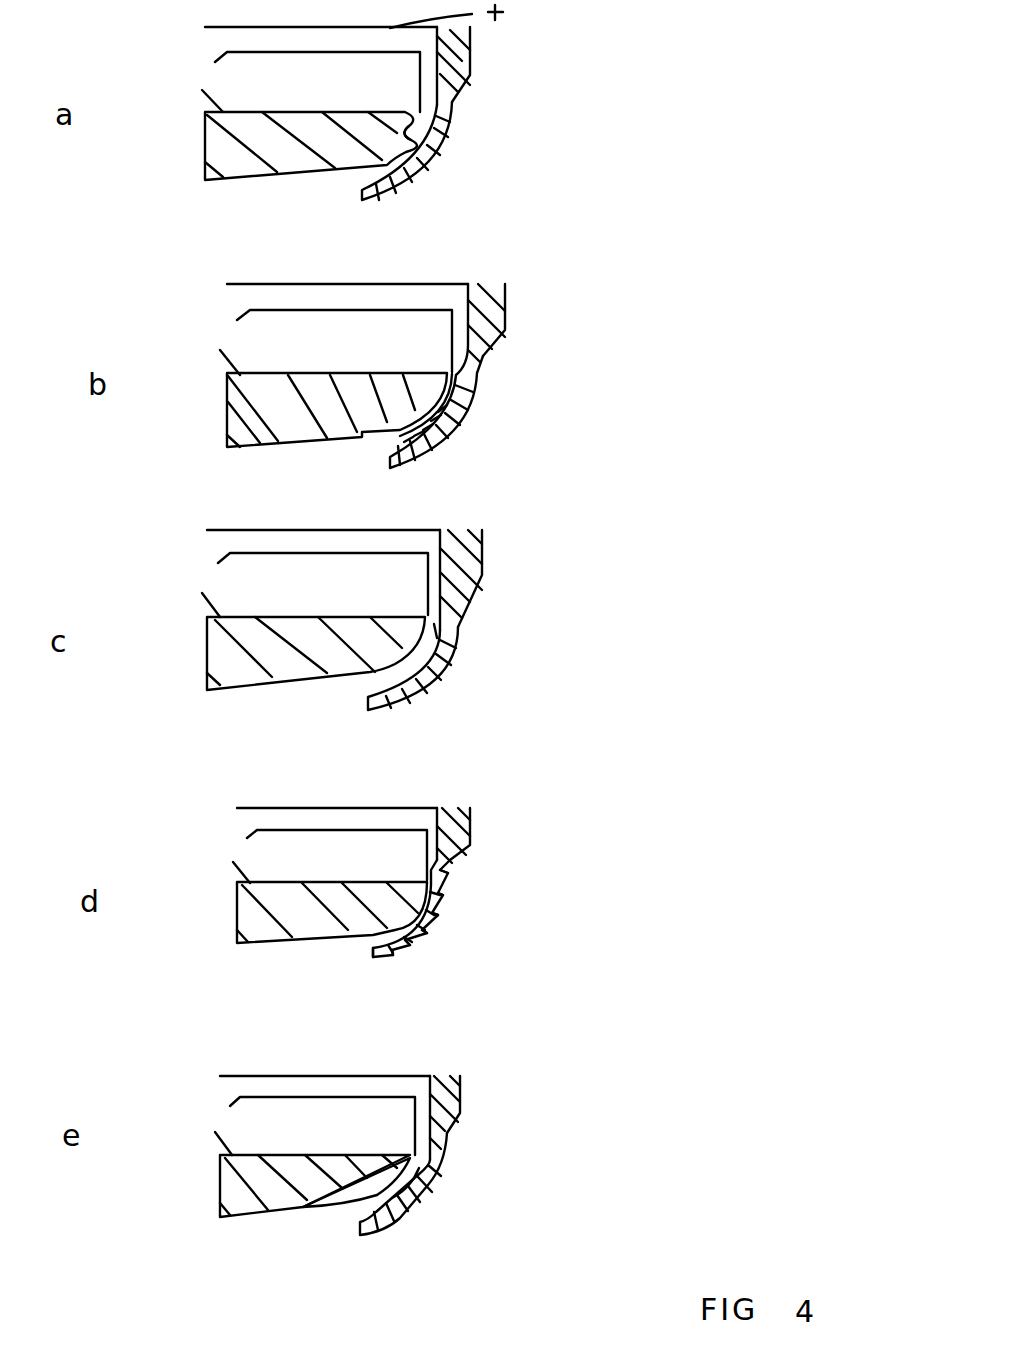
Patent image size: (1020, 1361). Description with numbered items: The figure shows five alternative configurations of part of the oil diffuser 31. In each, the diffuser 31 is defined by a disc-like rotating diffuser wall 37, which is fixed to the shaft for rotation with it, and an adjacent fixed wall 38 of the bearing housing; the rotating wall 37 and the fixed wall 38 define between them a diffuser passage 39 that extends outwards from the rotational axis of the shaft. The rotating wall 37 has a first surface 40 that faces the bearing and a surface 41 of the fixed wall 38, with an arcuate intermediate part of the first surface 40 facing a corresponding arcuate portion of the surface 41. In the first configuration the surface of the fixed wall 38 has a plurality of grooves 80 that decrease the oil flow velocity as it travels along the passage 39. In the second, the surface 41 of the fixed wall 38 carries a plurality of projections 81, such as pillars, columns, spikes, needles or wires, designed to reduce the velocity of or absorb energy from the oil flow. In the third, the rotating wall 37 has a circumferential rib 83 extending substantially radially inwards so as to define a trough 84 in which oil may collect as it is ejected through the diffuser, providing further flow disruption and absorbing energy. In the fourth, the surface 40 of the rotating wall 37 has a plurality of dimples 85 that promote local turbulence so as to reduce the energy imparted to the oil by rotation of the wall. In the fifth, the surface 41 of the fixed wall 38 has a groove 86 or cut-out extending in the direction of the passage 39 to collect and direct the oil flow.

In FIG. 4a, the oil diffuser 31 is at (545, 45).
In FIG. 4b, the oil diffuser 31 is at (565, 333).
In FIG. 4a, the diffuser wall 37 is at (458, 78).
In FIG. 4c, the diffuser wall 37 is at (453, 590).
In FIG. 4d, the diffuser wall 37 is at (455, 843).
In FIG. 4e, the diffuser wall 37 is at (450, 1110).
In FIG. 4a, the fixed wall 38 is at (216, 152).
In FIG. 4b, the fixed wall 38 is at (244, 428).
In FIG. 4d, the fixed wall 38 is at (250, 918).
In FIG. 4e, the fixed wall 38 is at (236, 1190).
In FIG. 4a, the diffuser passage 39 is at (423, 173).
In FIG. 4d, the diffuser passage 39 is at (378, 942).
In FIG. 4e, the diffuser passage 39 is at (380, 1212).
In FIG. 4d, the first surface 40 is at (455, 885).
In FIG. 4b, the surface 41 is at (445, 395).
In FIG. 4e, the surface 41 is at (425, 1190).
In FIG. 4a, the grooves 80 is at (437, 140).
In FIG. 4b, the projections 81 is at (452, 432).
In FIG. 4c, the circumferential rib 83 is at (448, 655).
In FIG. 4c, the trough 84 is at (446, 628).
In FIG. 4d, the dimples 85 is at (458, 965).
In FIG. 4e, the groove 86 is at (347, 1198).